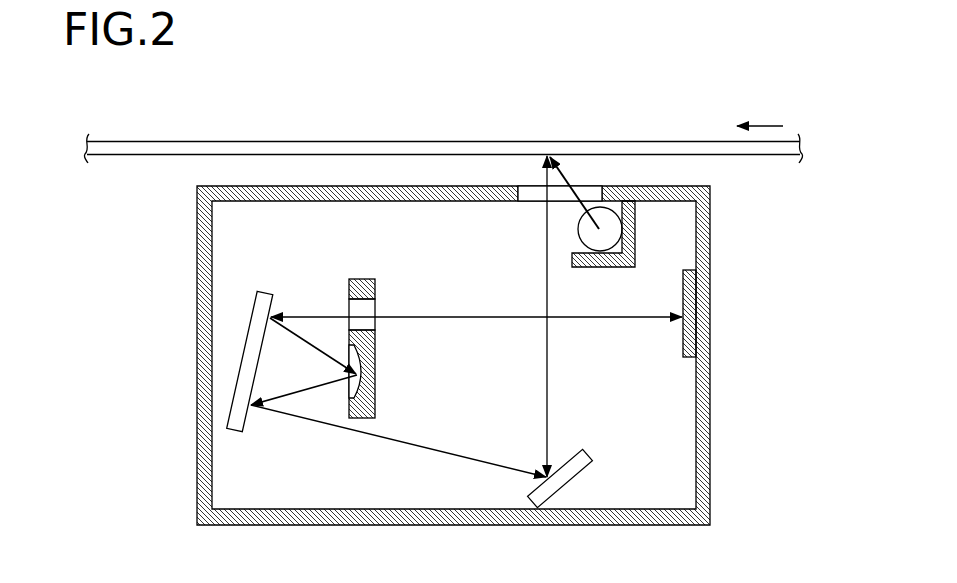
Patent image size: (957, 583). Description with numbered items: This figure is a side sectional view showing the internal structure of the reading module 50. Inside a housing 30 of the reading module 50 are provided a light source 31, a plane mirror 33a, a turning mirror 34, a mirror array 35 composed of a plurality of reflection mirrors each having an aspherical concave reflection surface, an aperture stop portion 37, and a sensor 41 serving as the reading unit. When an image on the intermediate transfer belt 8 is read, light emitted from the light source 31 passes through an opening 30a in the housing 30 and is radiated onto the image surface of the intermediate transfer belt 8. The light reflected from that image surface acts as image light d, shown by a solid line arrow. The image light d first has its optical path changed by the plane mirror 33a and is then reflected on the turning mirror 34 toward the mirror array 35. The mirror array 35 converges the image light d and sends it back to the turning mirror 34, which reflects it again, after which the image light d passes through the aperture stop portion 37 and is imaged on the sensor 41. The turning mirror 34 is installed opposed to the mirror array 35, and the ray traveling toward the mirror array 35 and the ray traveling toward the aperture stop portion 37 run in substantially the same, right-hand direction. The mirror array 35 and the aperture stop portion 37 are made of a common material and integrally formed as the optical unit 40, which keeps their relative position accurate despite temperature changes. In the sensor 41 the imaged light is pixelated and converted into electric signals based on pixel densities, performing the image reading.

The intermediate transfer belt 8 is at (710, 148).
The reading module 50 is at (748, 250).
The housing 30 is at (710, 410).
The opening 30a is at (528, 192).
The light source 31 is at (603, 237).
The image light d is at (545, 255).
The sensor 41 is at (682, 340).
The optical unit 40 is at (364, 344).
The aperture stop portion 37 is at (378, 322).
The mirror array 35 is at (346, 395).
The turning mirror 34 is at (244, 388).
The plane mirror 33a is at (557, 485).